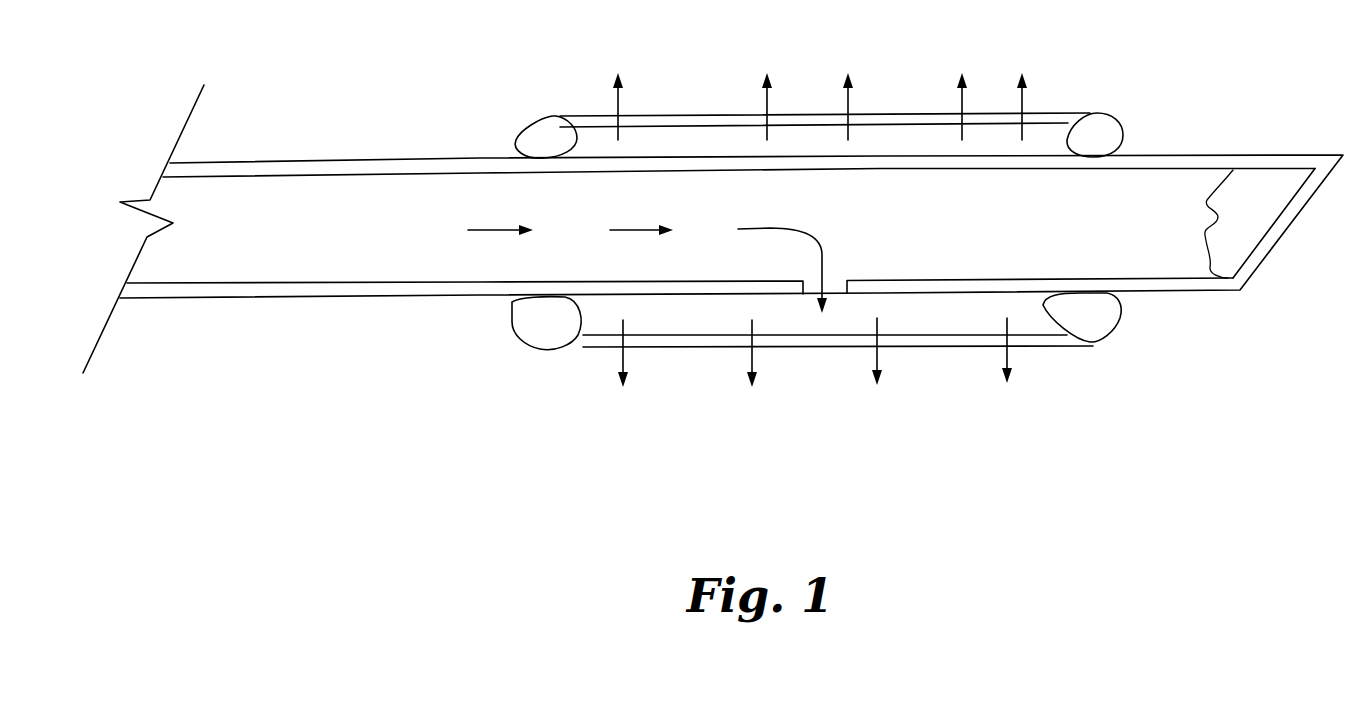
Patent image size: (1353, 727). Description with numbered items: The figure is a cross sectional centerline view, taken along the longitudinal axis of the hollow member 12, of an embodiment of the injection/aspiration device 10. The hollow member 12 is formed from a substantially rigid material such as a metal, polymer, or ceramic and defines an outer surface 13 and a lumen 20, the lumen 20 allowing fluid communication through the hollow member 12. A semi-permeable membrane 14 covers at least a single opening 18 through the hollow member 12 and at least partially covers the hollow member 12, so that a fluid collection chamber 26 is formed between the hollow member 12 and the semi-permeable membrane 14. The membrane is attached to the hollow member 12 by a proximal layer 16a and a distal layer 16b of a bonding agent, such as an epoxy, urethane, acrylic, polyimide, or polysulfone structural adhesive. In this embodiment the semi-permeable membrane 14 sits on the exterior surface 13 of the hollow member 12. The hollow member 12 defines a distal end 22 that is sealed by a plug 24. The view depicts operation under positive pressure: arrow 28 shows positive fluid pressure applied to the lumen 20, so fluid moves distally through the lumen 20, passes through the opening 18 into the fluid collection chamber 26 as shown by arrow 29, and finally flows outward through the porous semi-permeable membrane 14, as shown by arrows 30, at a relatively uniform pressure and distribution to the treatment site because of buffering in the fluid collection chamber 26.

The injection/aspiration device 10 is at (797, 422).
The hollow member 12 is at (283, 292).
The outer surface of hollow member 13 is at (463, 158).
The semi-permeable membrane 14 is at (900, 120).
The bonding agent proximal layer 16a is at (538, 333).
The bonding agent distal layer 16b is at (1115, 135).
The opening 18 is at (837, 285).
The lumen 20 is at (370, 215).
The distal end 22 is at (1278, 243).
The plug 24 is at (1268, 195).
The fluid collection chamber 26 is at (710, 137).
The arrow depicting positive fluid pressure in lumen 28 is at (485, 232).
The arrow depicting fluid passing through opening 29 is at (768, 228).
The arrow depicting fluid passing through semi-permeable membrane to patient 30 is at (615, 105).